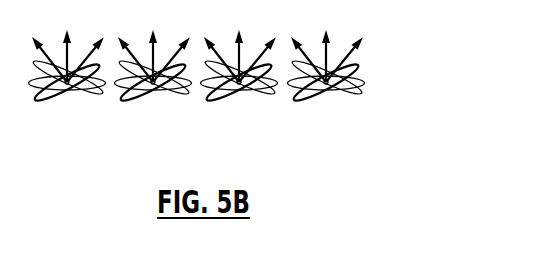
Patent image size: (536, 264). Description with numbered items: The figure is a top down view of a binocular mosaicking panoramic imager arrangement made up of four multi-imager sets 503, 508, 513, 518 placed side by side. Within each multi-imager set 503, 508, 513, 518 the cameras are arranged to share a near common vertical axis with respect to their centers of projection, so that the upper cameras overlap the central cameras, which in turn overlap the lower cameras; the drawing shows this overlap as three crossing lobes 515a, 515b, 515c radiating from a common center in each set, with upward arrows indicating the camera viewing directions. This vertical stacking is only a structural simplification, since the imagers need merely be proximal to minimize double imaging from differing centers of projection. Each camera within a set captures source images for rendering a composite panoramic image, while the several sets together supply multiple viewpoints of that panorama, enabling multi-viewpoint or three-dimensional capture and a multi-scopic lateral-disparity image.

The multi-imager set 503 is at (82, 111).
The multi-imager set 508 is at (165, 111).
The multi-imager set 513 is at (243, 111).
The multi-imager set 518 is at (324, 82).
The radiation lobe 515a is at (323, 111).
The radiation lobe 515b is at (326, 83).
The radiation lobe 515c is at (327, 78).